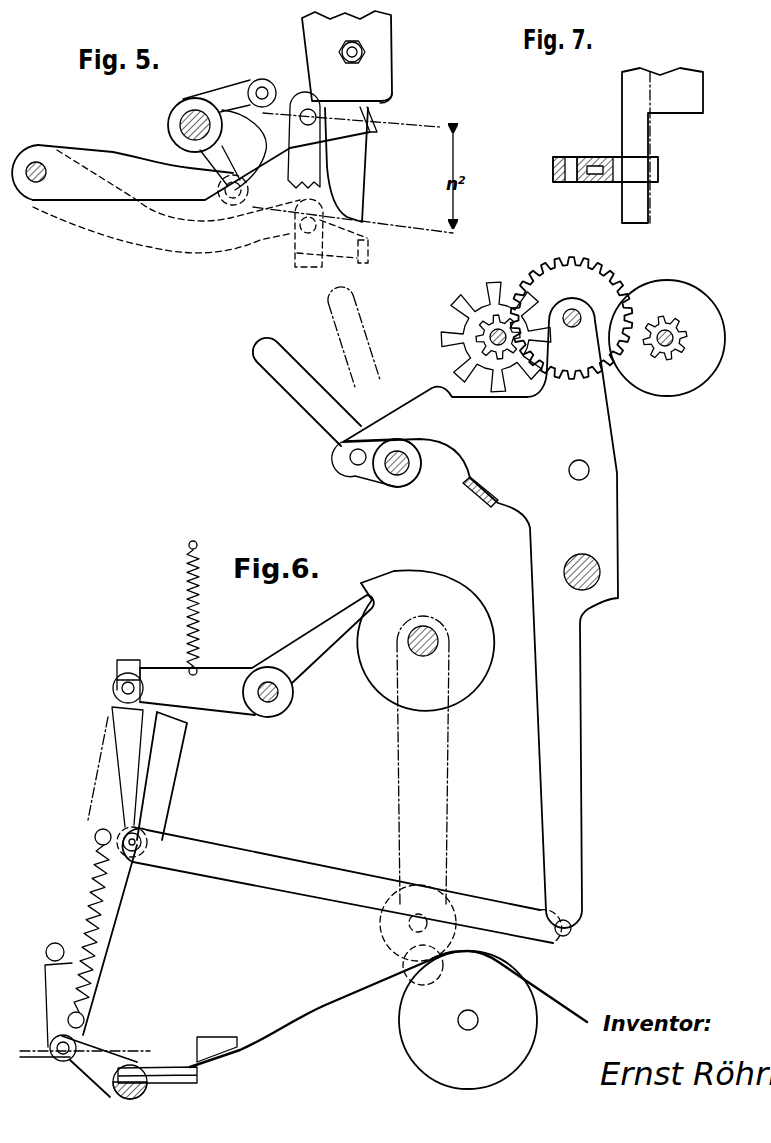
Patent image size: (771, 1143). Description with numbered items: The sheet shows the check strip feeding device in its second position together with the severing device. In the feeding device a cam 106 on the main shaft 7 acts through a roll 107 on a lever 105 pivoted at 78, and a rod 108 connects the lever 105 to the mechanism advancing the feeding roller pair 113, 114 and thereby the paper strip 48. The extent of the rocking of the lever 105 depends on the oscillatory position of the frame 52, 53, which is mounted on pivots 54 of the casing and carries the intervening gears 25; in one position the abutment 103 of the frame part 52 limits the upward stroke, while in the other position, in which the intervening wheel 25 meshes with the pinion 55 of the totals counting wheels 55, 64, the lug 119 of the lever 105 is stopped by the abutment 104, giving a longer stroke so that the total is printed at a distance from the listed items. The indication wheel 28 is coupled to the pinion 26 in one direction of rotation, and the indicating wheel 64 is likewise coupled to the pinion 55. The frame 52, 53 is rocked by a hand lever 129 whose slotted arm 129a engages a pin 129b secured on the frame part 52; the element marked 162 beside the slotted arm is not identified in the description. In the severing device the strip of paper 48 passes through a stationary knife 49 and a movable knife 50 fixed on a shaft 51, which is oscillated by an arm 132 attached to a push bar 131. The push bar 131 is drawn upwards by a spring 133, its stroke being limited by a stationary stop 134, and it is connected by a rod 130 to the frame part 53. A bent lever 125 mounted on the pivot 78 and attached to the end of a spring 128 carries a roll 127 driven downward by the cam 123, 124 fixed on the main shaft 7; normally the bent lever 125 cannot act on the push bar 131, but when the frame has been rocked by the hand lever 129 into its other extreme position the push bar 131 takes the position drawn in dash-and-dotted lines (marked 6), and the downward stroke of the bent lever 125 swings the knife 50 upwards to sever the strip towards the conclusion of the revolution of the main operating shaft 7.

In FIG. 6, the follower slot (dash-dot position) 6 is at (400, 778).
In FIG. 5, the main shaft 7 is at (182, 118).
In FIG. 6, the main shaft 7 is at (423, 656).
In FIG. 6, the intervening gear 25 is at (540, 275).
In FIG. 6, the pinion 26 is at (494, 324).
In FIG. 6, the indication wheel 28 is at (443, 326).
In FIG. 6, the paper strip 48 is at (309, 1016).
In FIG. 6, the stationary knife 49 is at (217, 1064).
In FIG. 7, the movable knife 50 is at (676, 108).
In FIG. 6, the movable knife 50 is at (180, 1084).
In FIG. 7, the shaft 51 is at (625, 136).
In FIG. 6, the shaft 51 is at (125, 1096).
In FIG. 5, the frame part 52 is at (387, 47).
In FIG. 6, the frame part 53 is at (613, 497).
In FIG. 6, the pivot 54 is at (598, 588).
In FIG. 6, the pinion 55 is at (668, 325).
In FIG. 6, the indicating wheel 64 is at (675, 395).
In FIG. 5, the pivot 78 is at (46, 174).
In FIG. 6, the pivot 78 is at (293, 692).
In FIG. 5, the abutment 103 is at (361, 202).
In FIG. 5, the abutment 104 is at (392, 96).
In FIG. 5, the lever 105 is at (137, 163).
In FIG. 5, the cam 106 is at (220, 96).
In FIG. 5, the roll 107 is at (262, 86).
In FIG. 5, the rod 108 is at (292, 163).
In FIG. 6, the feeding roller 113 is at (527, 1050).
In FIG. 6, the feeding roller 114 is at (384, 935).
In FIG. 5, the lug 119 is at (374, 133).
In FIG. 6, the cam 123 is at (458, 592).
In FIG. 6, the cam 124 is at (380, 569).
In FIG. 6, the bent lever 125 is at (228, 670).
In FIG. 6, the roll 127 is at (116, 690).
In FIG. 6, the spring 128 is at (187, 586).
In FIG. 6, the hand lever 129 is at (287, 382).
In FIG. 6, the slotted arm 129a is at (354, 473).
In FIG. 6, the pin 129b is at (350, 458).
In FIG. 6, the rod 130 is at (303, 864).
In FIG. 7, the push bar 131 is at (553, 168).
In FIG. 6, the push bar 131 is at (168, 768).
In FIG. 7, the arm 132 is at (603, 180).
In FIG. 6, the arm 132 is at (97, 1075).
In FIG. 6, the spring 133 is at (92, 880).
In FIG. 6, the stationary stop 134 is at (51, 983).
In FIG. 6, the hub 162 is at (408, 470).